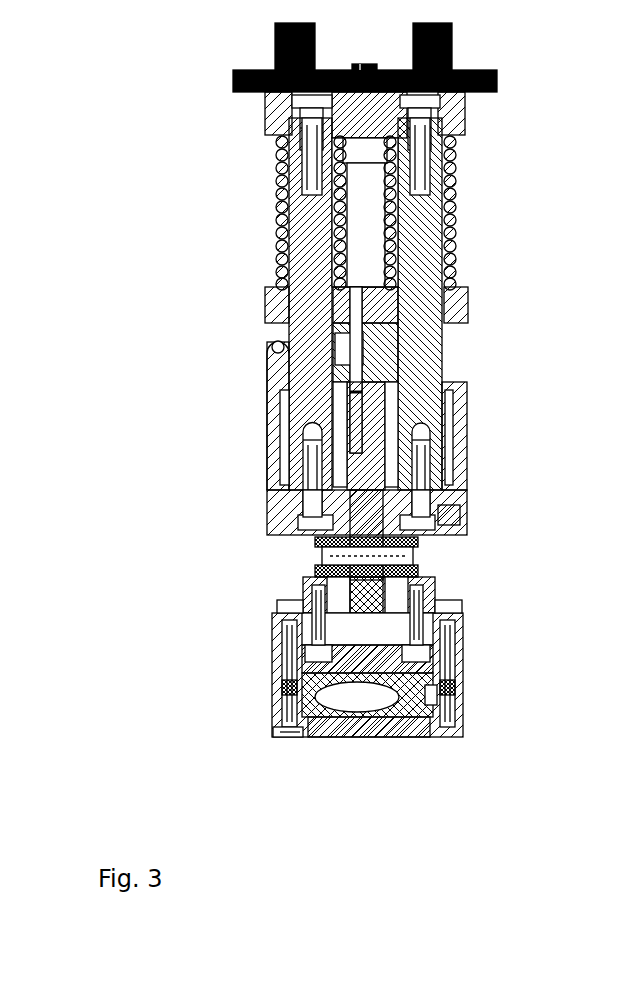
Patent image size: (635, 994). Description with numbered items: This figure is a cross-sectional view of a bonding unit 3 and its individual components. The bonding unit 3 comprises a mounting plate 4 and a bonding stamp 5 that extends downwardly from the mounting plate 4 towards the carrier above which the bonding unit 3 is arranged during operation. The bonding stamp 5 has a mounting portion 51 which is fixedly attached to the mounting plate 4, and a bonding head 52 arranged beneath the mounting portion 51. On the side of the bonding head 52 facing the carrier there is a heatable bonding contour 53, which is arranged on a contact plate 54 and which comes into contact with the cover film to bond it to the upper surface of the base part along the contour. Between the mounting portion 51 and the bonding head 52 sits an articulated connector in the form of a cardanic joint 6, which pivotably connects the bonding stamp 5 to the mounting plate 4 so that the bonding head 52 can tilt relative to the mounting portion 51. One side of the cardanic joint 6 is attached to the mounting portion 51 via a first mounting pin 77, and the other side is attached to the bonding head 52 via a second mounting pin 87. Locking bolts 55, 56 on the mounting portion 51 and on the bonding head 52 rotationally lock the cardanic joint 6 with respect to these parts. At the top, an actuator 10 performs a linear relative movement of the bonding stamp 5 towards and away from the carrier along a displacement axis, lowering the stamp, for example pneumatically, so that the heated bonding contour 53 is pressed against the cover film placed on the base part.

The actuator 10 is at (262, 45).
The mounting plate 4 is at (484, 110).
The bonding stamp 5 is at (337, 349).
The mounting portion 51 is at (487, 413).
The first mounting pin 77 is at (452, 517).
The cardanic joint 6 is at (315, 560).
The locking bolt 55 is at (420, 550).
The locking bolt 56 is at (420, 574).
The second mounting pin 87 is at (278, 607).
The bonding head 52 is at (492, 667).
The contact plate 54 is at (277, 737).
The heatable bonding contour 53 is at (317, 743).
The bonding unit 3 is at (386, 754).